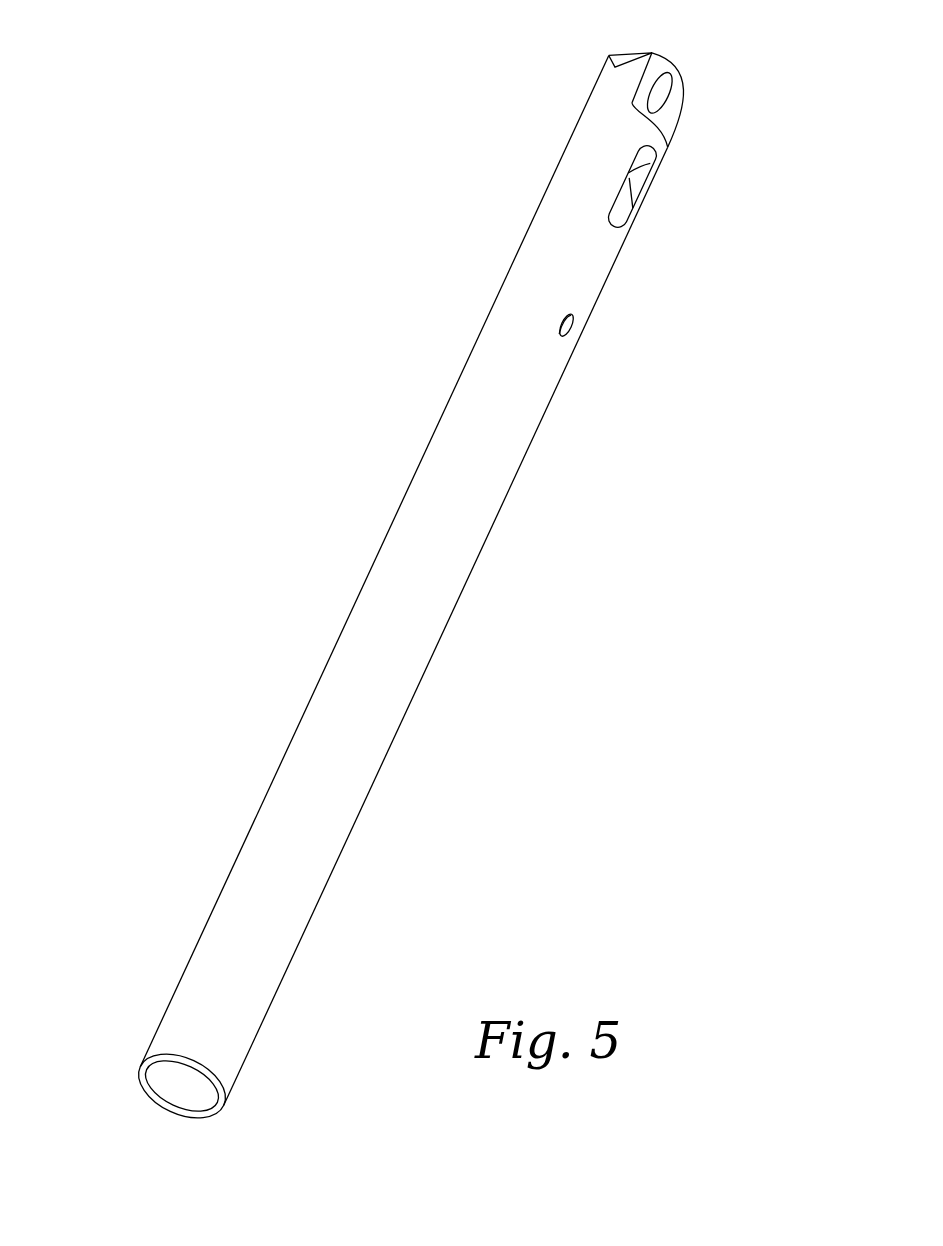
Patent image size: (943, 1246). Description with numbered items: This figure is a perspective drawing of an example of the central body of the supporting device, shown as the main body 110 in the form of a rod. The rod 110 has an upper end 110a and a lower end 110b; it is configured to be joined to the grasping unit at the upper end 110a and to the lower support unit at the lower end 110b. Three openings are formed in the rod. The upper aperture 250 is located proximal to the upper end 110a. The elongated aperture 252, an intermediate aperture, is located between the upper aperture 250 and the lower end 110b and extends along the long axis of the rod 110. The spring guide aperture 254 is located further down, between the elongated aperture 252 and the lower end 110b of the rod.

The main body 110 is at (401, 579).
The upper end 110a is at (498, 94).
The lower end 110b is at (104, 943).
The upper aperture 250 is at (663, 92).
The elongated aperture 252 is at (623, 192).
The spring guide aperture 254 is at (568, 327).